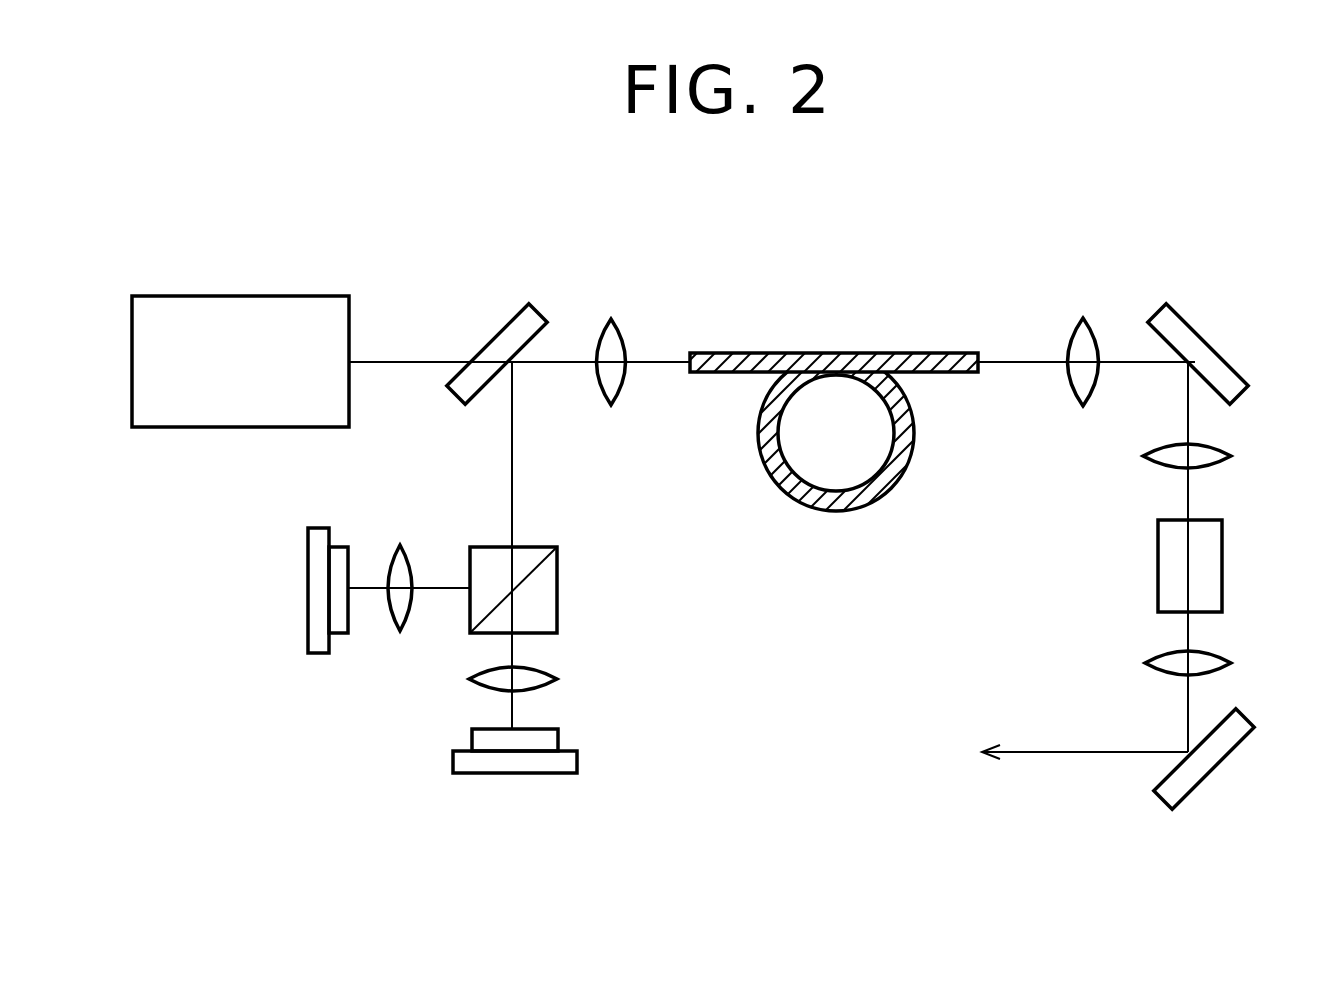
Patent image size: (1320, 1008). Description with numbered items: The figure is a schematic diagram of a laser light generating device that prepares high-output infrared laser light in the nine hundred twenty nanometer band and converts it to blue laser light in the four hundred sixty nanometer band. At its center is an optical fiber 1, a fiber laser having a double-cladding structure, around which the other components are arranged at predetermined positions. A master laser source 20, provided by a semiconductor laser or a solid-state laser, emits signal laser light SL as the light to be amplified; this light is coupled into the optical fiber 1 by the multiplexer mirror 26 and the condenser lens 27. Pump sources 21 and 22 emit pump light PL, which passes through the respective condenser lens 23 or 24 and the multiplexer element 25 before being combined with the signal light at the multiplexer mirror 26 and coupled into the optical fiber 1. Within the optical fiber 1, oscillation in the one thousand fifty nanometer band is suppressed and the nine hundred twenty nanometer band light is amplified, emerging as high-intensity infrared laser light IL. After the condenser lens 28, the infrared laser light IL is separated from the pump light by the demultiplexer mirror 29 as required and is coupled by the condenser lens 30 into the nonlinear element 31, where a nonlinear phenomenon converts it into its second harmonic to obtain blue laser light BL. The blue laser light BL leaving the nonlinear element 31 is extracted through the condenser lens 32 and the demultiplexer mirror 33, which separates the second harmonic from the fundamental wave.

The optical fiber 1 is at (735, 353).
The master laser source 20 is at (237, 296).
The pump source 21 is at (308, 551).
The pump source 22 is at (578, 760).
The condenser lens 23 is at (400, 545).
The condenser lens 24 is at (558, 679).
The multiplexer element 25 is at (558, 595).
The multiplexer mirror 26 is at (507, 318).
The condenser lens 27 is at (611, 319).
The condenser lens 28 is at (1083, 318).
The demultiplexer mirror 29 is at (1203, 330).
The condenser lens 30 is at (1143, 456).
The nonlinear element 31 is at (1158, 564).
The condenser lens 32 is at (1145, 662).
The demultiplexer mirror 33 is at (1220, 770).
The signal laser light SL is at (408, 362).
The pump light PL is at (513, 472).
The infrared laser light IL is at (1017, 362).
The blue laser light BL is at (1080, 752).